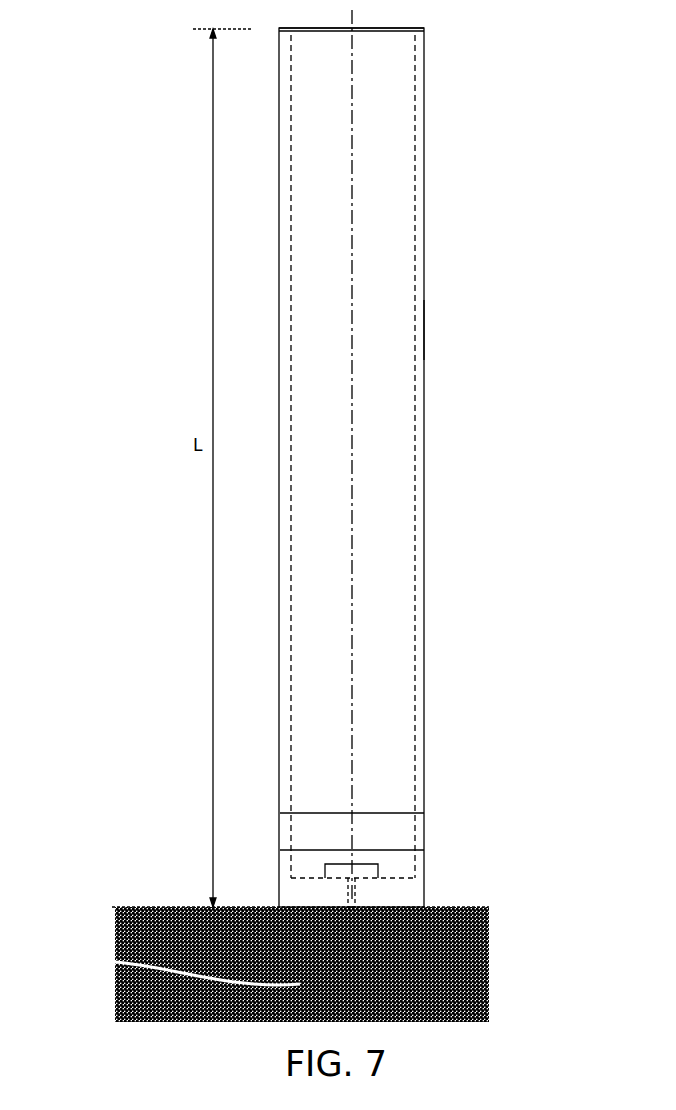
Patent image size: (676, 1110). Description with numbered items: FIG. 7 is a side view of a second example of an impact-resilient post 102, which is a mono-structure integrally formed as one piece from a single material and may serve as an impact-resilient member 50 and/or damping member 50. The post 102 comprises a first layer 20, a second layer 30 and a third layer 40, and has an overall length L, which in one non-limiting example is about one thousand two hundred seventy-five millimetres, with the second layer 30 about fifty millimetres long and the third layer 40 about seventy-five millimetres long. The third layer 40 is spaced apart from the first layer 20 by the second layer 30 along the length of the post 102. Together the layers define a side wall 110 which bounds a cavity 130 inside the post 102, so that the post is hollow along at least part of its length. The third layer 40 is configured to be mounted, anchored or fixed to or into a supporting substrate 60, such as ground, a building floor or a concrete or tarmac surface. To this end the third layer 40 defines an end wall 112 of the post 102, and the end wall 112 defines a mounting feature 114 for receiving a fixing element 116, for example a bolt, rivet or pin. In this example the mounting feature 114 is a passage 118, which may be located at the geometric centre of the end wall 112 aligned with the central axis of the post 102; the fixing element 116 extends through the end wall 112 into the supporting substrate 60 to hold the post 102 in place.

The impact-resilient post 102 is at (426, 48).
The impact-resilient member 50 is at (426, 130).
The cavity 130 is at (394, 228).
The side wall 110 is at (423, 330).
The first layer 20 is at (425, 520).
The second layer 30 is at (427, 830).
The end wall 112 is at (428, 872).
The third layer 40 is at (427, 890).
The supporting substrate 60 is at (136, 915).
The fixing element 116 is at (116, 962).
The mounting feature 114 is at (353, 884).
The passage 118 is at (357, 893).